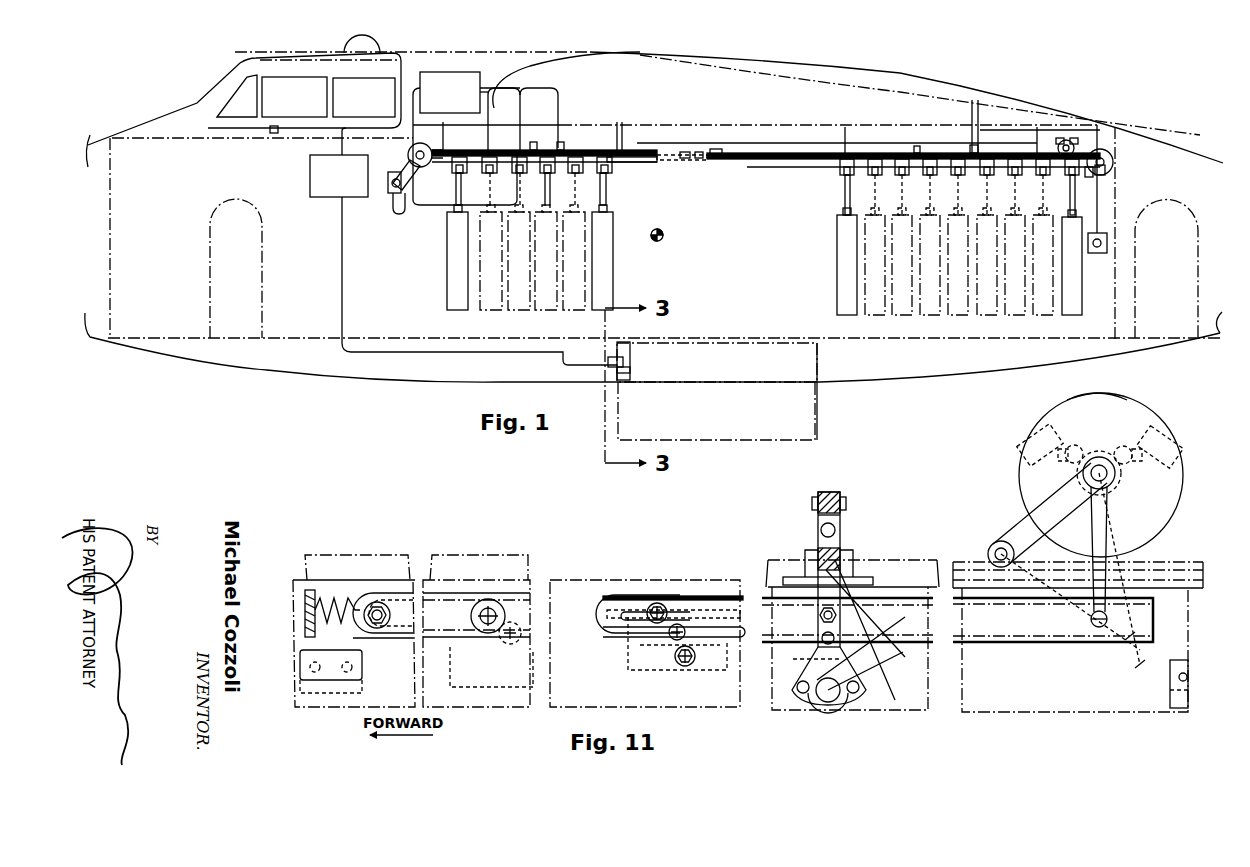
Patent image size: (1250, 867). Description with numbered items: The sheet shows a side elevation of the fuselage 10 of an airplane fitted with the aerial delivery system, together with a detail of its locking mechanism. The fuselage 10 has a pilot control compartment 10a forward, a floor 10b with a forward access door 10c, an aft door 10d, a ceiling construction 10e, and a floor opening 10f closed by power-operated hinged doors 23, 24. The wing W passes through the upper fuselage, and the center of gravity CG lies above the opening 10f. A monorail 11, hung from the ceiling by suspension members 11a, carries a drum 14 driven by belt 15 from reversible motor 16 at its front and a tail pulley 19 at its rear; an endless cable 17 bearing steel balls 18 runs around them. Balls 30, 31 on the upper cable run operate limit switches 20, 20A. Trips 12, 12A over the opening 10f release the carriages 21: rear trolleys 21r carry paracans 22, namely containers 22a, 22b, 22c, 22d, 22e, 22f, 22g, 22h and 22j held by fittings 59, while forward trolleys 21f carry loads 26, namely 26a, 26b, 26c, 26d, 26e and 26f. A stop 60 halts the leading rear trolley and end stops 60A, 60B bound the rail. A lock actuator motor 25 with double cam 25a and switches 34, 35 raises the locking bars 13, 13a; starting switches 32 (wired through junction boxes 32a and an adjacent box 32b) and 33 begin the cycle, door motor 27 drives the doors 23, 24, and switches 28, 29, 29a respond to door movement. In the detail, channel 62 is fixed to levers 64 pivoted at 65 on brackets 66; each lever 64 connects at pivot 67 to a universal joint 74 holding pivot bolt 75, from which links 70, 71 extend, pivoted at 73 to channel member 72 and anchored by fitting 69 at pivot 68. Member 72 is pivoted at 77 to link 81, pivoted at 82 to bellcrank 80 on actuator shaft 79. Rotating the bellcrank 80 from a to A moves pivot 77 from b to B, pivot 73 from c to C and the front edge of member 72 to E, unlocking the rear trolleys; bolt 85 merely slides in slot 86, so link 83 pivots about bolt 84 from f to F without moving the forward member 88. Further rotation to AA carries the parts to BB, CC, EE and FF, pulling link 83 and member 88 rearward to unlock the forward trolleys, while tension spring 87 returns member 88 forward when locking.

In FIG. 1, the fuselage 10 is at (917, 120).
In FIG. 1, the pilot control compartment 10a is at (287, 92).
In FIG. 1, the floor 10b is at (367, 338).
In FIG. 1, the access door 10c is at (215, 270).
In FIG. 1, the door 10d is at (1178, 270).
In FIG. 1, the ceiling construction 10e is at (762, 125).
In FIG. 1, the opening 10f is at (810, 368).
In FIG. 1, the monorail beam 11 is at (648, 150).
In FIG. 11, the monorail beam 11 is at (590, 580).
In FIG. 1, the structural suspension members 11a is at (448, 134).
In FIG. 1, the tripping element 12 is at (750, 168).
In FIG. 1, the tripping element 12A is at (655, 188).
In FIG. 1, the locking bar 13 is at (927, 153).
In FIG. 11, the locking bar 13 is at (897, 560).
In FIG. 1, the forward locking bar 13a is at (505, 148).
In FIG. 11, the forward locking bar 13a is at (385, 552).
In FIG. 1, the drum 14 is at (408, 154).
In FIG. 1, the belt 15 is at (405, 169).
In FIG. 1, the reversible electric motor 16 is at (393, 205).
In FIG. 1, the endless cable 17 is at (553, 173).
In FIG. 1, the steel balls 18 is at (1045, 178).
In FIG. 1, the tail pulley 19 is at (1114, 162).
In FIG. 1, the limit switch 20 is at (562, 142).
In FIG. 1, the limit switch 20A is at (977, 100).
In FIG. 1, the carriages 21 is at (612, 175).
In FIG. 1, the forward carriage 21f is at (455, 177).
In FIG. 1, the rear trolleys 21r is at (1094, 178).
In FIG. 1, the cargo items 22 is at (922, 287).
In FIG. 1, the aft container 22a is at (838, 268).
In FIG. 1, the aft container 22b is at (878, 315).
In FIG. 1, the aft container 22c is at (898, 318).
In FIG. 1, the aft container 22d is at (935, 315).
In FIG. 1, the aft container 22e is at (952, 318).
In FIG. 1, the aft container 22f is at (985, 315).
In FIG. 1, the aft container 22g is at (1012, 318).
In FIG. 1, the aft container 22h is at (1046, 315).
In FIG. 1, the aft container 22j is at (1076, 318).
In FIG. 1, the hinged door 23 is at (635, 432).
In FIG. 1, the hinged door 24 is at (755, 435).
In FIG. 1, the lock actuator motor 25 is at (1058, 143).
In FIG. 11, the lock actuator motor 25 is at (1182, 480).
In FIG. 11, the double cam element 25a is at (1103, 452).
In FIG. 1, the forward containers 26 is at (548, 272).
In FIG. 1, the forward load 26a is at (612, 278).
In FIG. 1, the forward load 26b is at (565, 310).
In FIG. 1, the forward load 26c is at (550, 310).
In FIG. 1, the forward load 26d is at (520, 310).
In FIG. 1, the forward load 26e is at (484, 310).
In FIG. 1, the forward load 26f is at (447, 282).
In FIG. 1, the door actuator motor 27 is at (623, 362).
In FIG. 1, the switch 28 is at (627, 347).
In FIG. 1, the switch 29 is at (630, 372).
In FIG. 1, the switch 29a is at (630, 364).
In FIG. 1, the ball element 30 is at (570, 150).
In FIG. 1, the ball element 31 is at (650, 143).
In FIG. 1, the push-button starting switch 32 is at (272, 133).
In FIG. 1, the junction boxes 32a is at (339, 162).
In FIG. 1, the display unit 32b is at (450, 92).
In FIG. 1, the push-button starting switch 33 is at (1107, 243).
In FIG. 1, the limit switch 34 is at (1062, 138).
In FIG. 11, the limit switch 34 is at (1030, 433).
In FIG. 1, the limit switch 35 is at (1074, 140).
In FIG. 11, the limit switch 35 is at (1172, 435).
In FIG. 1, the fitting 59 is at (840, 186).
In FIG. 1, the stop member 60 is at (716, 152).
In FIG. 1, the end limit stop 60A is at (402, 183).
In FIG. 11, the end limit stop 60A is at (352, 700).
In FIG. 1, the end limit stop 60B is at (1106, 172).
In FIG. 11, the end limit stop 60B is at (1180, 708).
In FIG. 11, the channel member 62 is at (770, 580).
In FIG. 1, the hinged member 64 is at (534, 142).
In FIG. 11, the hinged member 64 is at (836, 495).
In FIG. 11, the pivot 65 is at (806, 558).
In FIG. 11, the bracket 66 is at (822, 560).
In FIG. 11, the pivot 67 is at (846, 503).
In FIG. 11, the pivot 68 is at (830, 703).
In FIG. 11, the fitting 69 is at (800, 700).
In FIG. 11, the link member 70 is at (786, 580).
In FIG. 11, the lower link member 71 is at (815, 660).
In FIG. 1, the channel member 72 is at (690, 162).
In FIG. 11, the channel member 72 is at (725, 600).
In FIG. 11, the pivot 73 is at (818, 615).
In FIG. 11, the universal joint 74 is at (840, 530).
In FIG. 11, the pivot bolt 75 is at (835, 532).
In FIG. 11, the pivot 77 is at (1097, 628).
In FIG. 11, the shaft 79 is at (1116, 478).
In FIG. 11, the bellcrank 80 is at (1012, 540).
In FIG. 11, the link 81 is at (1072, 590).
In FIG. 11, the pivot 82 is at (993, 550).
In FIG. 1, the link 83 is at (685, 152).
In FIG. 11, the link 83 is at (585, 626).
In FIG. 11, the bolt 84 is at (495, 600).
In FIG. 11, the bolt 85 is at (662, 602).
In FIG. 1, the slot 86 is at (696, 152).
In FIG. 11, the slot 86 is at (615, 625).
In FIG. 11, the tension spring 87 is at (352, 597).
In FIG. 1, the forward channel member 88 is at (655, 178).
In FIG. 11, the forward channel member 88 is at (405, 640).
In FIG. 1, the wing W is at (858, 66).
In FIG. 1, the center of gravity CG is at (665, 235).
In FIG. 11, the position A is at (1092, 532).
In FIG. 11, the position AA is at (1083, 555).
In FIG. 11, the position B is at (1135, 641).
In FIG. 11, the position BB is at (1140, 665).
In FIG. 11, the position C is at (895, 628).
In FIG. 11, the position CC is at (900, 660).
In FIG. 11, the position E is at (680, 625).
In FIG. 11, the position EE is at (690, 665).
In FIG. 11, the position F is at (508, 625).
In FIG. 11, the position FF is at (512, 645).
In FIG. 11, the position a is at (1062, 500).
In FIG. 11, the position b is at (1108, 620).
In FIG. 11, the position c is at (822, 636).
In FIG. 11, the position f is at (482, 600).